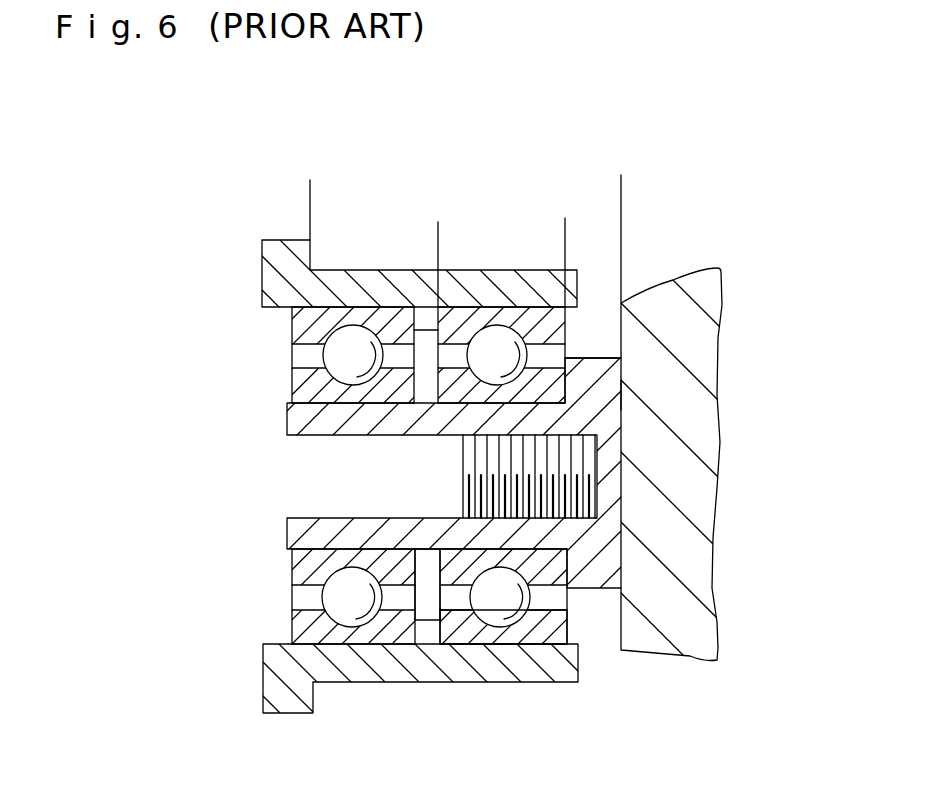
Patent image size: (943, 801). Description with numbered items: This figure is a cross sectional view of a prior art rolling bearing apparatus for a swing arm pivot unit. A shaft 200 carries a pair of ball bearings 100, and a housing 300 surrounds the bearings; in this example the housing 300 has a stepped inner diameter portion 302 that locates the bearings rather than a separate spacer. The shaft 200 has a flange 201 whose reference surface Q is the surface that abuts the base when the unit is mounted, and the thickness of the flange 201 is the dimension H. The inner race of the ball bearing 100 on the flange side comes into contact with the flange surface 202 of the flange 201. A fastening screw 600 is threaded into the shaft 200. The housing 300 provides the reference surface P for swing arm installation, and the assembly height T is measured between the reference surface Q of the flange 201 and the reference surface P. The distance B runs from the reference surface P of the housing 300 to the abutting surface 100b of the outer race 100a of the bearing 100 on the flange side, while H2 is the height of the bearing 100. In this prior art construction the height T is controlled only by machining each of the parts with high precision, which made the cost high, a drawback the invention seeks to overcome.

The ball bearing 100 is at (440, 529).
The outer race 100a is at (528, 644).
The abutting surface 100b is at (426, 623).
The shaft 200 is at (293, 417).
The flange 201 is at (599, 358).
The flange surface 202 is at (567, 376).
The housing 300 is at (272, 268).
The stepped inner diameter portion 302 is at (423, 645).
The fastening screw 600 is at (560, 436).
The reference surface for swing arm installation P is at (318, 262).
The reference surface of the flange Q is at (610, 396).
The assembly height T is at (621, 192).
The distance from reference surface P to abutting surface B is at (438, 228).
The height of the bearing H2 is at (565, 228).
The thickness of the flange H is at (621, 228).